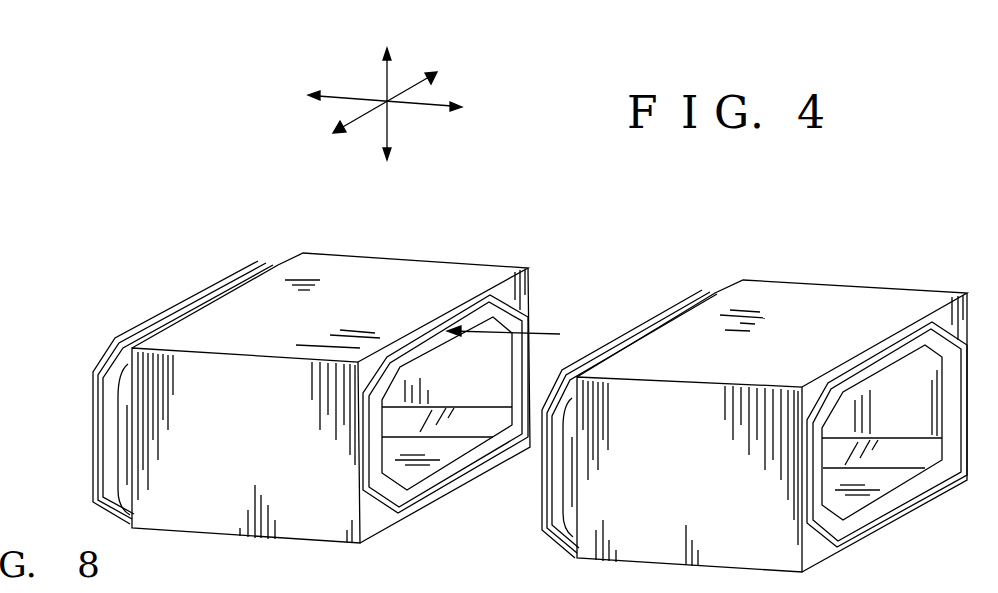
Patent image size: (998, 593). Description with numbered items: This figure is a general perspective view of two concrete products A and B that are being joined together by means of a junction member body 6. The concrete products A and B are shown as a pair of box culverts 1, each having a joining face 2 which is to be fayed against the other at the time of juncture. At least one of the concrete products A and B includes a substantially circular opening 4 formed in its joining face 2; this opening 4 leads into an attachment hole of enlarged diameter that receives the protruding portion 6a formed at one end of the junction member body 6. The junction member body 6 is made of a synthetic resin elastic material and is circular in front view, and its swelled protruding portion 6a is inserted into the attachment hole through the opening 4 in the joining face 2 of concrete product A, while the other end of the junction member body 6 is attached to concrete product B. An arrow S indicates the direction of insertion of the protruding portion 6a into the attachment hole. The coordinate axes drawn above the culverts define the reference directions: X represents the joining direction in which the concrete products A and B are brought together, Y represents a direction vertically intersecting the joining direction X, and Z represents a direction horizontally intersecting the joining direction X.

The box culvert 1 is at (307, 337).
The joining face 2 is at (428, 343).
The circular opening 4 is at (458, 313).
The junction member body 6 is at (110, 443).
The protruding portion 6a is at (97, 393).
The concrete product A is at (382, 277).
The concrete product B is at (833, 297).
The direction of insertion S is at (558, 334).
The joining direction X is at (433, 100).
The vertical intersecting direction Y is at (405, 88).
The horizontal intersecting direction Z is at (390, 133).